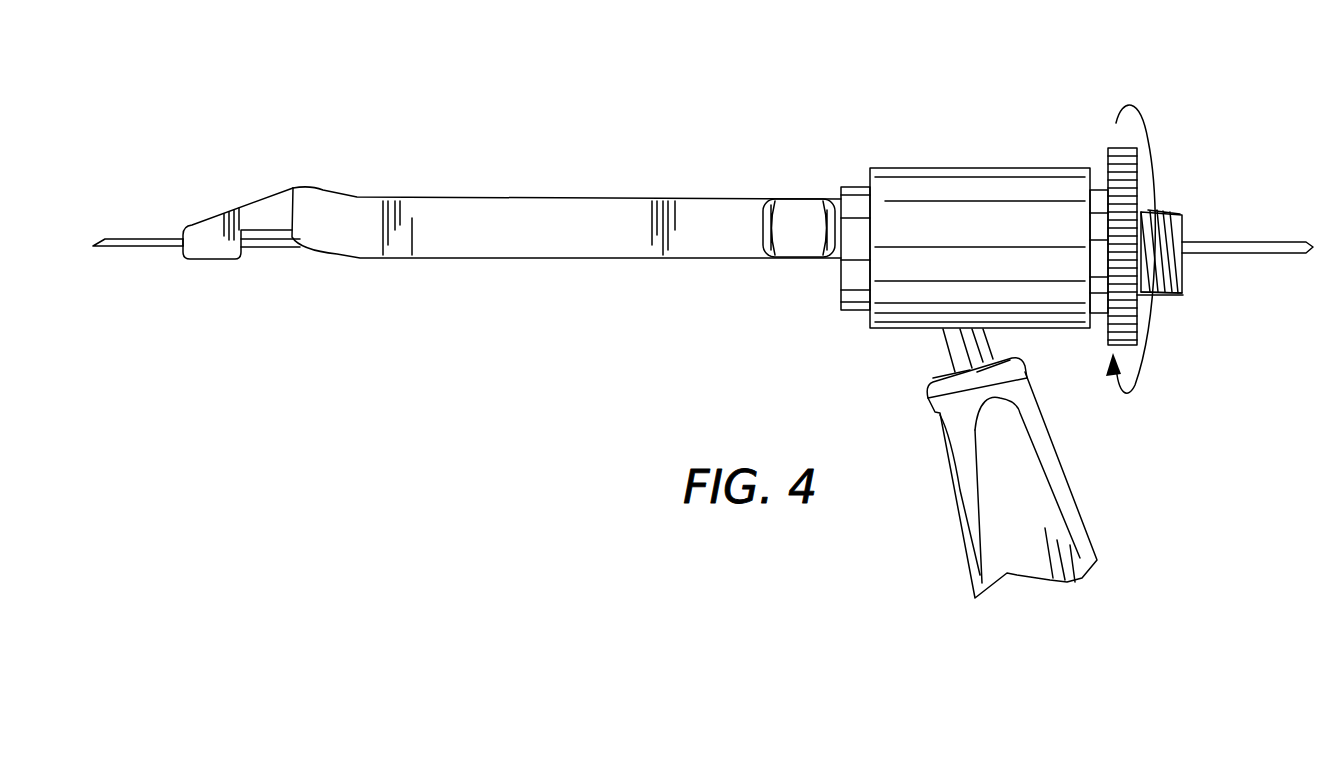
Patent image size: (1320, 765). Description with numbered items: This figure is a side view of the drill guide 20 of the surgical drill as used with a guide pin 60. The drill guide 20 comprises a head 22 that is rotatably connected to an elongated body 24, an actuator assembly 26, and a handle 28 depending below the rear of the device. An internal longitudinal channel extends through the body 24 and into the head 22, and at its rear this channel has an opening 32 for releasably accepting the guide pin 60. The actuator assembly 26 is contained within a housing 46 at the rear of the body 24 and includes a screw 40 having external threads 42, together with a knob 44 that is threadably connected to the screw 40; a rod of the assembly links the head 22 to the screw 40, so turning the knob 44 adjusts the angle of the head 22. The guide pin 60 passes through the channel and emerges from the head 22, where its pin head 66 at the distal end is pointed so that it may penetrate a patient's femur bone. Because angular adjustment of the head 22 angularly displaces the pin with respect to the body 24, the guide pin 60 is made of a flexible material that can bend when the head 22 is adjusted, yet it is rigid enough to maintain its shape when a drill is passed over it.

The drill guide 20 is at (596, 306).
The head 22 is at (258, 207).
The body 24 is at (432, 208).
The actuator assembly 26 is at (940, 136).
The handle 28 is at (1045, 522).
The opening 32 is at (1183, 258).
The screw 40 is at (1165, 212).
The external threads 42 is at (1182, 320).
The knob 44 is at (1108, 150).
The housing 46 is at (1007, 186).
The guide pin 60 is at (160, 238).
The pin head 66 is at (93, 241).